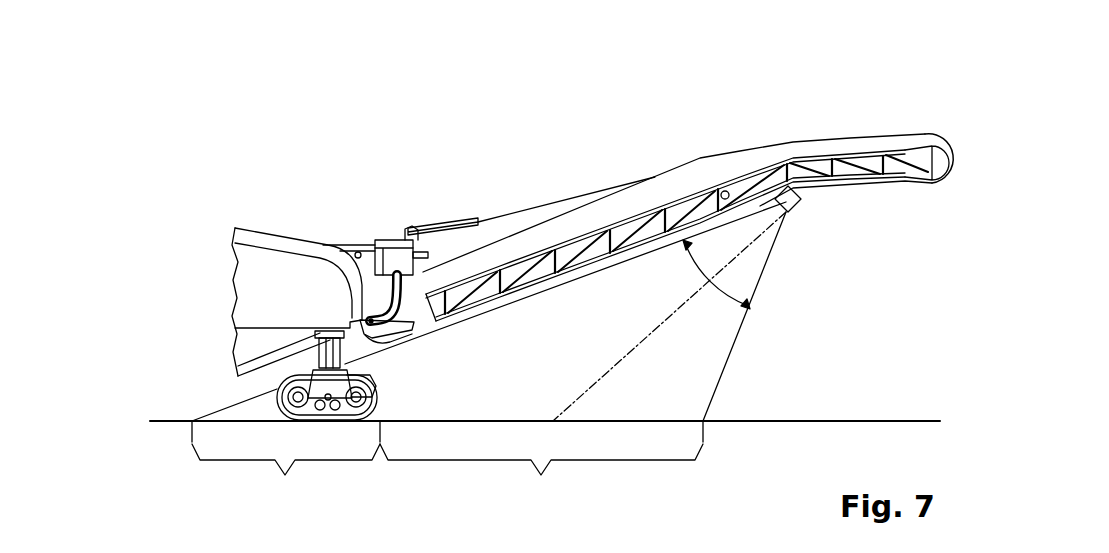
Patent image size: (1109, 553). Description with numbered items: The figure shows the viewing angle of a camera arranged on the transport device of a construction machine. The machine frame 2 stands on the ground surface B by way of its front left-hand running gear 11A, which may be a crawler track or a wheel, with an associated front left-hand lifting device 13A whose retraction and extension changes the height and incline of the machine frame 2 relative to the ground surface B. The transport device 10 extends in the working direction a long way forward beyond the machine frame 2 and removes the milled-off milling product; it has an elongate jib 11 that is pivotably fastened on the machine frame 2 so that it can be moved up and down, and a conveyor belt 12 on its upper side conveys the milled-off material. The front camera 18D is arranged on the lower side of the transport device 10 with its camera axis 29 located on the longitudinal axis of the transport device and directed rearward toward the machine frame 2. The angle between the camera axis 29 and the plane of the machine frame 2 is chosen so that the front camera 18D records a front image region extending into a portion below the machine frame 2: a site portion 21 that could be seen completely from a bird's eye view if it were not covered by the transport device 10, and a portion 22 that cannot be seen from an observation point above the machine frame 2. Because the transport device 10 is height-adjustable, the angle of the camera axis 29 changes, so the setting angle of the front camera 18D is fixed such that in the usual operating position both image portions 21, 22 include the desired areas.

The machine frame 2 is at (443, 281).
The transport device 10 is at (572, 226).
The jib 11 is at (908, 186).
The conveyor belt 12 is at (850, 144).
The front camera 18D is at (803, 205).
The camera axis 29 is at (738, 250).
The front left-hand lifting device 13A is at (346, 345).
The front left-hand running gear 11A is at (368, 396).
The site portion 21 is at (541, 467).
The portion 22 is at (286, 467).
The ground surface B is at (822, 420).